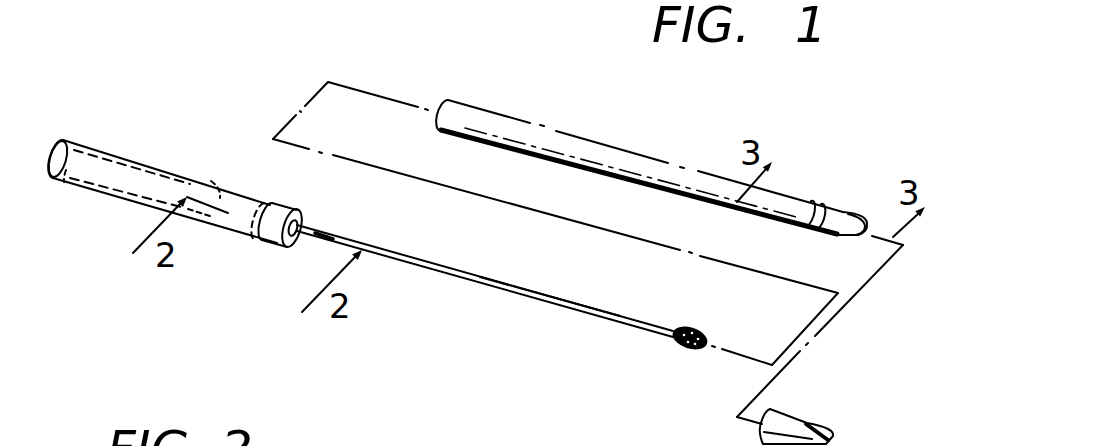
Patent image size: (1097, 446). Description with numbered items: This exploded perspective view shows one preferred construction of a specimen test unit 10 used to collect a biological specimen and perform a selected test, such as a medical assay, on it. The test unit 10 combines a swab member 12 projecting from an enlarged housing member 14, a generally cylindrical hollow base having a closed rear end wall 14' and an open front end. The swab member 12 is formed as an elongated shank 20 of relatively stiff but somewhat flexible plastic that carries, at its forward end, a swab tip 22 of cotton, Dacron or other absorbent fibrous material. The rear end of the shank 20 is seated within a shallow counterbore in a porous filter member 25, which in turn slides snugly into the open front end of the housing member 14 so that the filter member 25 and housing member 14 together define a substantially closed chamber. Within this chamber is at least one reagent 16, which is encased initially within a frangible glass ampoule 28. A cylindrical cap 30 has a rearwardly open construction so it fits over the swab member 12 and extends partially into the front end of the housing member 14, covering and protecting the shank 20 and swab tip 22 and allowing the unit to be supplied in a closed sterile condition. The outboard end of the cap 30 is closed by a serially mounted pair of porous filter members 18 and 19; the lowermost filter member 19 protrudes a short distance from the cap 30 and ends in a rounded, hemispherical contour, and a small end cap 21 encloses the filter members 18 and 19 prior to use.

The specimen test unit 10 is at (440, 74).
The swab member 12 is at (450, 288).
The housing member 14 is at (161, 176).
The closed rear end wall 14' is at (54, 131).
The reagent 16 is at (116, 152).
The filter member 18 is at (819, 205).
The filter member 19 is at (851, 241).
The shank 20 is at (533, 292).
The end cap 21 is at (803, 413).
The swab tip 22 is at (690, 350).
The filter member 25 is at (288, 204).
The frangible glass ampoule 28 is at (104, 190).
The cylindrical cap 30 is at (623, 155).